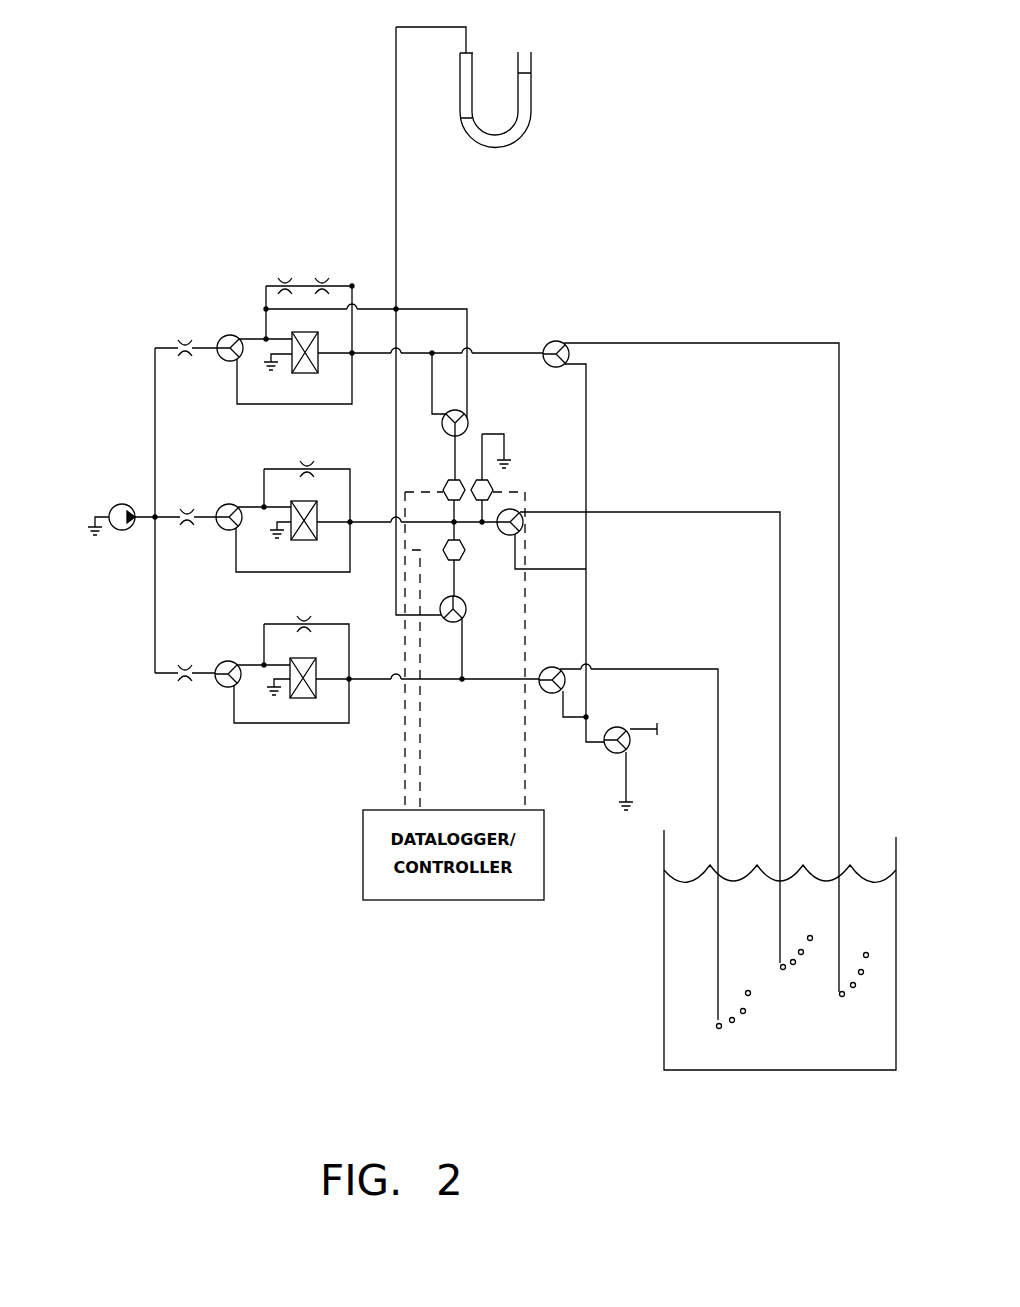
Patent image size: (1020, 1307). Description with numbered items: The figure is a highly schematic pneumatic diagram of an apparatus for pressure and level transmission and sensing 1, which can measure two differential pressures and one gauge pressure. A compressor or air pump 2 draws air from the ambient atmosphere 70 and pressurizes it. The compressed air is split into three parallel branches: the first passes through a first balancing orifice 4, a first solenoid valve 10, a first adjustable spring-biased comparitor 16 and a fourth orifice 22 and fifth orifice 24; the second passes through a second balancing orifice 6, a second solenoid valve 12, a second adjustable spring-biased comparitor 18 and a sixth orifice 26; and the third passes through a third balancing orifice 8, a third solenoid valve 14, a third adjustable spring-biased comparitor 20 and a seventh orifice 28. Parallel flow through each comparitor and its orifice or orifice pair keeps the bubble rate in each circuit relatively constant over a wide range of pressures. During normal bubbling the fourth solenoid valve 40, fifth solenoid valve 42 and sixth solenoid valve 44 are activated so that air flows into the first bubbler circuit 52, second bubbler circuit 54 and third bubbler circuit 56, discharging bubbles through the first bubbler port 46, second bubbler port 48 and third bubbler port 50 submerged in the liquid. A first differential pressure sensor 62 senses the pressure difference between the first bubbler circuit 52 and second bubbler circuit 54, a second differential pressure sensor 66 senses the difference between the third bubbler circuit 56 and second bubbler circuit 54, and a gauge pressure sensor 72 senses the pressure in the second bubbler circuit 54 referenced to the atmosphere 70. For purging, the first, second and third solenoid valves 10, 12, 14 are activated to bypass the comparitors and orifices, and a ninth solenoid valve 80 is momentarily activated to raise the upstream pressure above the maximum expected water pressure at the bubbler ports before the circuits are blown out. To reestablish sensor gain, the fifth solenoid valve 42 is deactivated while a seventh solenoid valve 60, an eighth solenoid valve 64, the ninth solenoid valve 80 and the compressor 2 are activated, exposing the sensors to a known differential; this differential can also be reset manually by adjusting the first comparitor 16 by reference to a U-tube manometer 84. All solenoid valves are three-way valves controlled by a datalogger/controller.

The apparatus for pressure and level transmission and sensing 1 is at (147, 358).
The compressor or air pump 2 is at (115, 504).
The first balancing orifice 4 is at (186, 343).
The second balancing orifice 6 is at (185, 508).
The third balancing orifice 8 is at (183, 663).
The first solenoid valve 10 is at (228, 336).
The second solenoid valve 12 is at (228, 504).
The third solenoid valve 14 is at (226, 659).
The first adjustable spring-biased comparitor 16 is at (305, 374).
The second adjustable spring-biased comparitor 18 is at (305, 541).
The third adjustable spring-biased comparitor 20 is at (300, 700).
The fourth orifice 22 is at (287, 281).
The fifth orifice 24 is at (322, 281).
The sixth orifice 26 is at (305, 464).
The seventh orifice 28 is at (304, 619).
The fourth solenoid valve 40 is at (552, 341).
The fifth solenoid valve 42 is at (522, 516).
The sixth solenoid valve 44 is at (553, 666).
The first bubbler port 46 is at (836, 997).
The second bubbler port 48 is at (778, 968).
The third bubbler port 50 is at (715, 1022).
The first bubbler circuit 52 is at (733, 338).
The second bubbler circuit 54 is at (725, 507).
The third bubbler circuit 56 is at (695, 666).
The seventh solenoid valve 60 is at (468, 423).
The first differential pressure sensor 62 is at (441, 483).
The eighth solenoid valve 64 is at (463, 617).
The second differential pressure sensor 66 is at (463, 559).
The atmosphere 70 is at (268, 366).
The gauge pressure sensor 72 is at (508, 481).
The ninth solenoid valve 80 is at (606, 729).
The U-tube manometer 84 is at (531, 110).